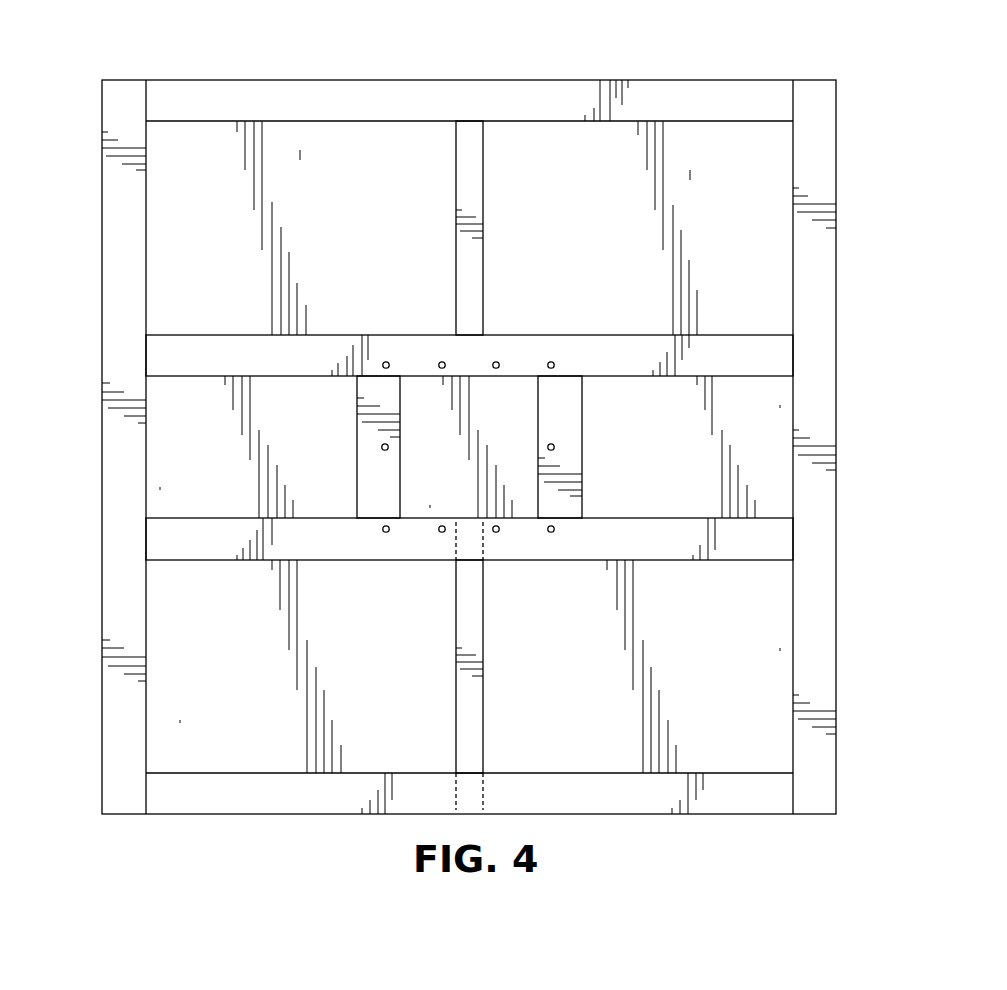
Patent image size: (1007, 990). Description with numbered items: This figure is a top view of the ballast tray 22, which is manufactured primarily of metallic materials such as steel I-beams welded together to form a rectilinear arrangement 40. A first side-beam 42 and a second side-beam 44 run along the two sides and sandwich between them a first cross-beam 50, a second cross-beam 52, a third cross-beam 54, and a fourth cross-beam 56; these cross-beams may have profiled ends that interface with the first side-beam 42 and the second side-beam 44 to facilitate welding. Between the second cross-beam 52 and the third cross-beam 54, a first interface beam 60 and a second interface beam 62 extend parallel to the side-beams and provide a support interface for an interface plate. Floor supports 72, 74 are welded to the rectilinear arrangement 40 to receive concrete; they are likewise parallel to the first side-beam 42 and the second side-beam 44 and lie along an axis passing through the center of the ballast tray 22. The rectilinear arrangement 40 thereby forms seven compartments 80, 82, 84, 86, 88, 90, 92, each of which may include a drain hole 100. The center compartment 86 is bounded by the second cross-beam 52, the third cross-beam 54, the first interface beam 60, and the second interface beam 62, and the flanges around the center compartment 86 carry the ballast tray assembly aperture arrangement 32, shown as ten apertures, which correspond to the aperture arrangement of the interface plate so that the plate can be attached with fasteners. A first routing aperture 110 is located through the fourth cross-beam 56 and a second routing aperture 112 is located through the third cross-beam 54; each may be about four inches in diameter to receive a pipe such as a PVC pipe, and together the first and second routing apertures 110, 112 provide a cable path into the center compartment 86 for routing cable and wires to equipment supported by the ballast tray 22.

The ballast tray 22 is at (878, 314).
The ballast tray assembly aperture arrangement 32 is at (499, 358).
The rectilinear arrangement 40 is at (838, 175).
The first side-beam 42 is at (112, 247).
The second side-beam 44 is at (812, 500).
The first cross-beam 50 is at (450, 102).
The second cross-beam 52 is at (607, 350).
The third cross-beam 54 is at (660, 528).
The fourth cross-beam 56 is at (622, 797).
The first interface beam 60 is at (372, 460).
The second interface beam 62 is at (570, 418).
The floor support 72 is at (468, 172).
The floor support 74 is at (473, 702).
The compartment 80 is at (336, 242).
The compartment 82 is at (621, 242).
The compartment 84 is at (216, 474).
The center compartment 86 is at (446, 494).
The compartment 88 is at (648, 470).
The compartment 90 is at (260, 695).
The compartment 92 is at (723, 695).
The drain hole 100 is at (307, 160).
The first routing aperture 110 is at (483, 796).
The second routing aperture 112 is at (483, 524).